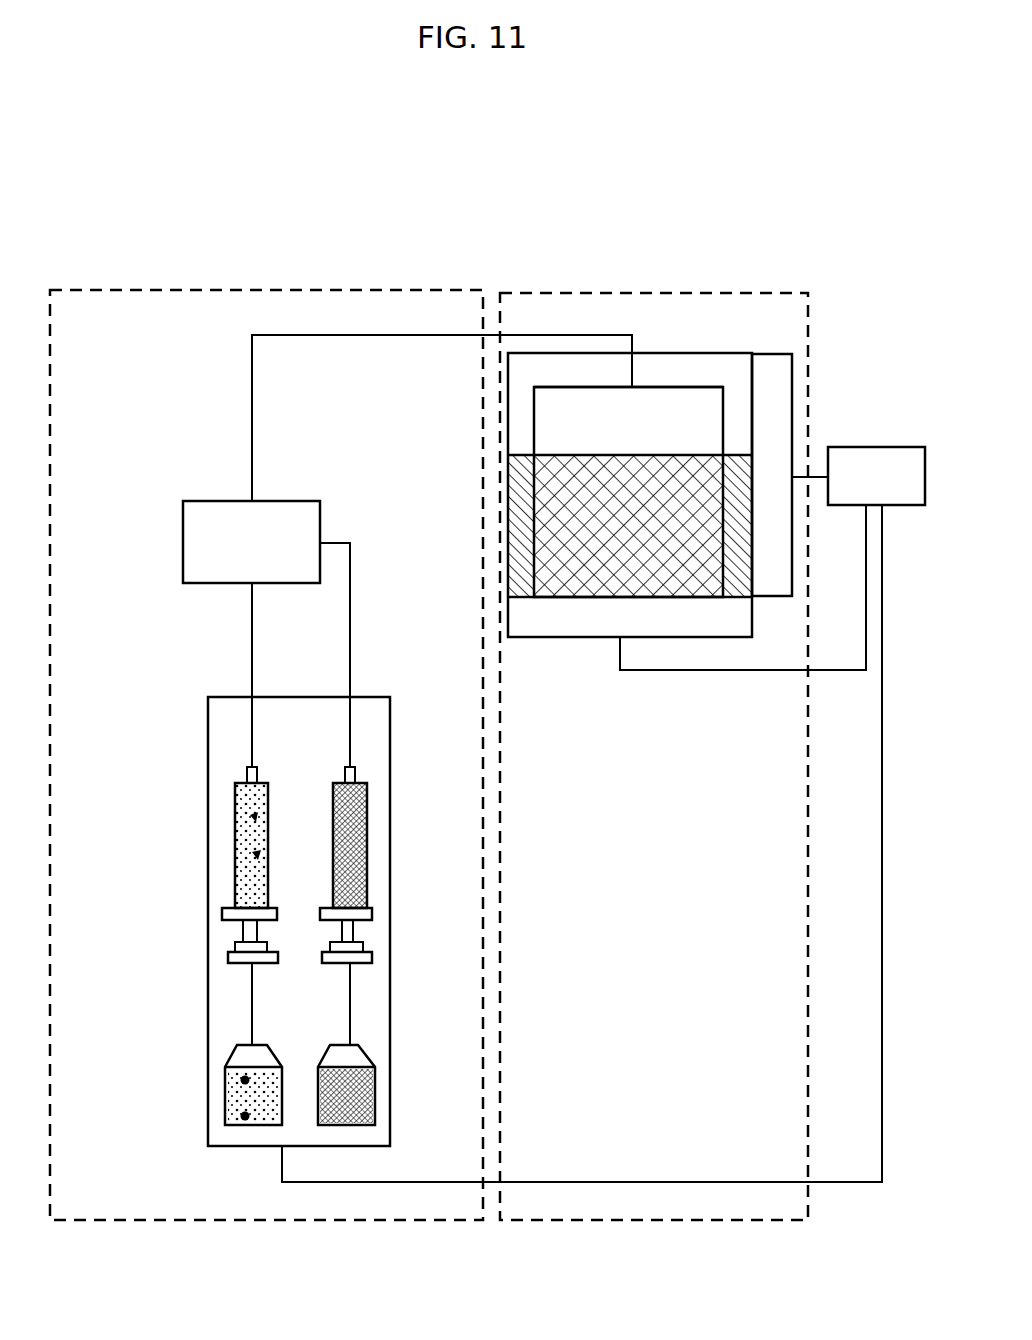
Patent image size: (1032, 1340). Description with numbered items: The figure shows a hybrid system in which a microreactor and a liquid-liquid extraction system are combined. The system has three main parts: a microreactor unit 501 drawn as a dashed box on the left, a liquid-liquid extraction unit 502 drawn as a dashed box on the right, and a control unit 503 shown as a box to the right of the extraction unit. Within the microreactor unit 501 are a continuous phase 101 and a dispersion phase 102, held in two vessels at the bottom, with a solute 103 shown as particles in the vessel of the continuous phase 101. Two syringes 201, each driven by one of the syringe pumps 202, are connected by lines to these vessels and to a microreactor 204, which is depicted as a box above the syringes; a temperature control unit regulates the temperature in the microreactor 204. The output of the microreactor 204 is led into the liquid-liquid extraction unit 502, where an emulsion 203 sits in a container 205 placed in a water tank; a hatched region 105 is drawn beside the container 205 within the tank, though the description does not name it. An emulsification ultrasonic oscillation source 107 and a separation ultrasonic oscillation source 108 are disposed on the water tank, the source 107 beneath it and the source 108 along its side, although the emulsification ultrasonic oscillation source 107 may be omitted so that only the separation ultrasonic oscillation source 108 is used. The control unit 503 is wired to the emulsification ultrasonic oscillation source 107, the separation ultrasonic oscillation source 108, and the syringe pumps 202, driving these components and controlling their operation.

The continuous phase 101 is at (225, 1072).
The dispersion phase 102 is at (375, 1072).
The solute 103 is at (240, 1115).
The electrolyte 105 is at (741, 455).
The emulsification ultrasonic oscillation source 107 is at (570, 640).
The separation ultrasonic oscillation source 108 is at (788, 354).
The syringes 201 is at (235, 838).
The syringe pumps 202 is at (228, 956).
The emulsion 203 is at (612, 455).
The microreactor 204 is at (183, 542).
The container 205 is at (677, 387).
The microreactor unit 501 is at (215, 290).
The liquid-liquid extraction unit 502 is at (543, 293).
The control unit 503 is at (877, 447).